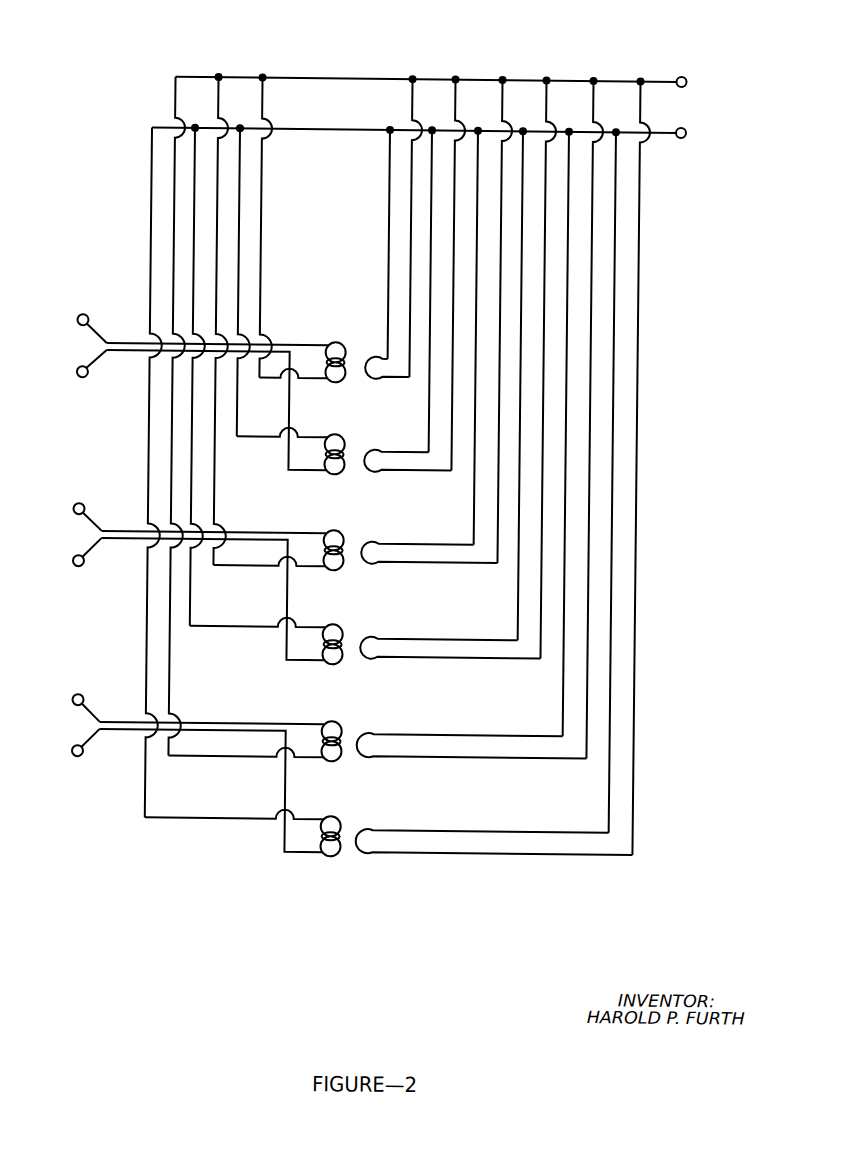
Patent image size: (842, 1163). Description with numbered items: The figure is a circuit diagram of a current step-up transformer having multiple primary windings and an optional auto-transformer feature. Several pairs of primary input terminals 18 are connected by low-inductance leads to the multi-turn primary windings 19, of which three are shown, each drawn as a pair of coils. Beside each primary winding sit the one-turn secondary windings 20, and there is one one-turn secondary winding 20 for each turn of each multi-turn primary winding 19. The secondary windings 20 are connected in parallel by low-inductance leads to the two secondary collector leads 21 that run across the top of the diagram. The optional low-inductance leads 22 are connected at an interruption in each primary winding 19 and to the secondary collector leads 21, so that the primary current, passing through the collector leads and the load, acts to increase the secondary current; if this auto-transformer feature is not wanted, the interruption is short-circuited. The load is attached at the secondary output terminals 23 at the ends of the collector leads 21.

The primary input terminals 18 is at (77, 330).
The multi-turn primary windings 19 is at (333, 388).
The one-turn secondary windings 20 is at (380, 383).
The secondary collector leads 21 is at (325, 128).
The optional low-inductance leads 22 is at (266, 441).
The secondary output terminals 23 is at (686, 83).